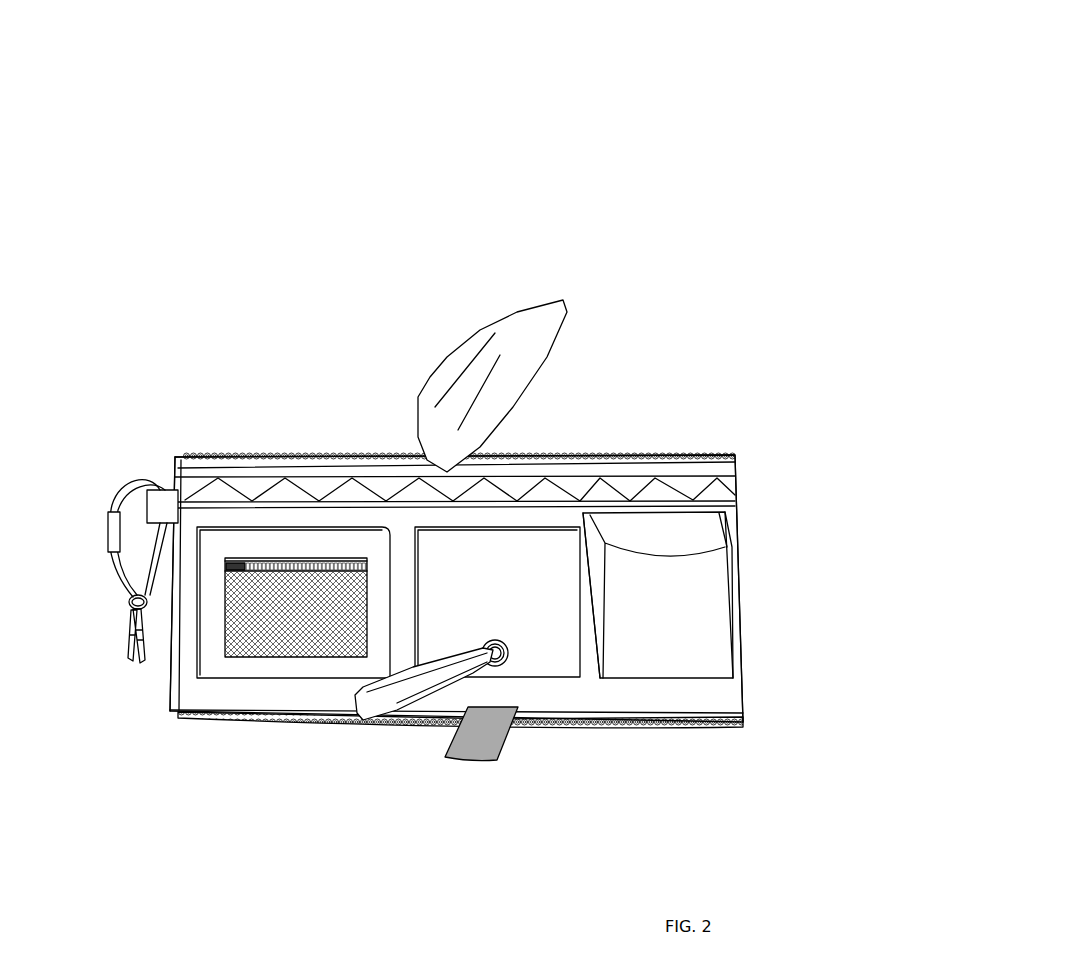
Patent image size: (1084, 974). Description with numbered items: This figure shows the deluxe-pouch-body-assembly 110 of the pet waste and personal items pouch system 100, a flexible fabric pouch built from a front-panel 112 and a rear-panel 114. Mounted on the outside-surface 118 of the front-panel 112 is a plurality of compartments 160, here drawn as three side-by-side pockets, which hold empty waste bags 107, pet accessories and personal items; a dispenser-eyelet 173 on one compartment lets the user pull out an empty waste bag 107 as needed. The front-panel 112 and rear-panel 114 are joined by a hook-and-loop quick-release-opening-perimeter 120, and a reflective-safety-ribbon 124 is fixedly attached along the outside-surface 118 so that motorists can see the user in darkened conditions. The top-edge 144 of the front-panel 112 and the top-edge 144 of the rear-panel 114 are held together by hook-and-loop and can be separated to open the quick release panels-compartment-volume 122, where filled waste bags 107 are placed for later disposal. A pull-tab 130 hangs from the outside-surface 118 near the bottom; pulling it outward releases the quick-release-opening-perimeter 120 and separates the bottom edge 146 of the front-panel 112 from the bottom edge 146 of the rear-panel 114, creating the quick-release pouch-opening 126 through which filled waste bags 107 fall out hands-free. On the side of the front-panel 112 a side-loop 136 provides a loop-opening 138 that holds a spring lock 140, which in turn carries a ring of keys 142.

The pet waste and personal items pouch system 100 is at (640, 88).
The deluxe-pouch-body-assembly 110 is at (653, 130).
The front-panel 112 is at (167, 703).
The rear-panel 114 is at (164, 678).
The outside-surface 118 is at (728, 508).
The quick-release-opening-perimeter 120 is at (553, 450).
The quick release panels-compartment-volume 122 is at (407, 467).
The reflective-safety-ribbon 124 is at (737, 479).
The quick-release pouch-opening 126 is at (438, 714).
The pull-tab 130 is at (478, 767).
The side-loop 136 is at (143, 502).
The loop-opening 138 is at (163, 486).
The spring lock 140 is at (106, 533).
The ring of keys 142 is at (122, 615).
The top-edge 144 is at (498, 446).
The bottom edge 146 is at (297, 713).
The plurality of compartments 160 is at (287, 541).
The dispenser-eyelet 173 is at (514, 655).
The waste bags 107 is at (527, 307).